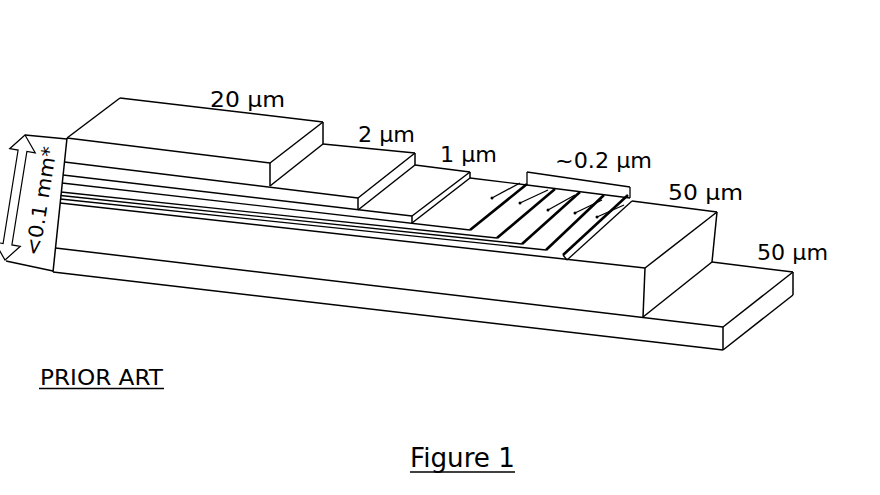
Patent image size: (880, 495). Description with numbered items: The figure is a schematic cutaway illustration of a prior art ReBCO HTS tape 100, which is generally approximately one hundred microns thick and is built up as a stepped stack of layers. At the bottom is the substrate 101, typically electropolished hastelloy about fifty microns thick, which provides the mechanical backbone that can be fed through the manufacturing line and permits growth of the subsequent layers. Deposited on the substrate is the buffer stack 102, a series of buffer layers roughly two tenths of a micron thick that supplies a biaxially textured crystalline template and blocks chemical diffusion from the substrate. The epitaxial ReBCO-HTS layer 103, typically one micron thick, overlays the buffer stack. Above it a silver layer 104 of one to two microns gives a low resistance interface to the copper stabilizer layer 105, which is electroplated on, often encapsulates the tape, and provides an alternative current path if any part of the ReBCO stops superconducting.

The tape 100 is at (423, 211).
The substrate 101 is at (662, 232).
The buffer stack 102 is at (547, 168).
The epitaxial ReBCO-HTS layer 103 is at (431, 187).
The silver layer 104 is at (348, 167).
The copper stabilizer layer 105 is at (201, 128).